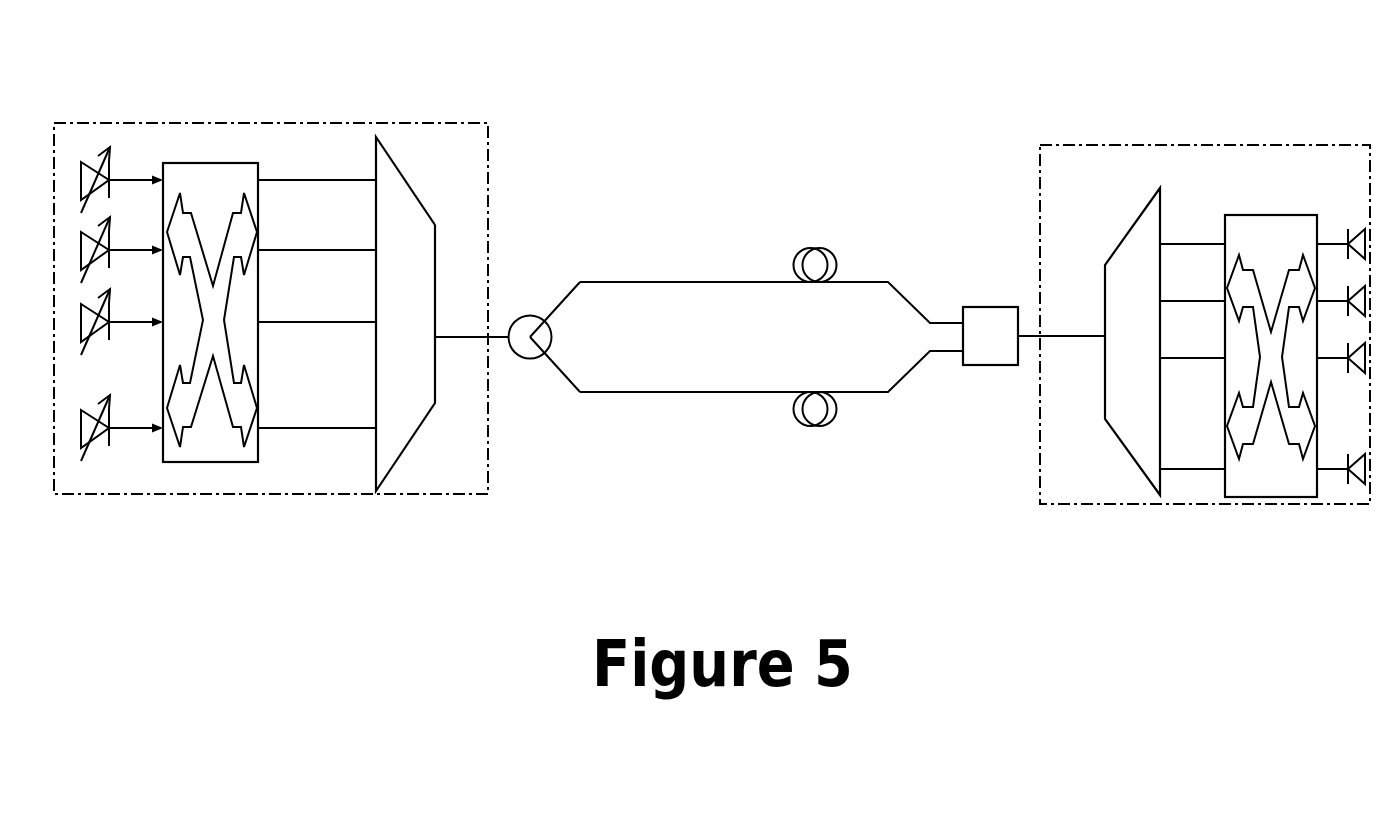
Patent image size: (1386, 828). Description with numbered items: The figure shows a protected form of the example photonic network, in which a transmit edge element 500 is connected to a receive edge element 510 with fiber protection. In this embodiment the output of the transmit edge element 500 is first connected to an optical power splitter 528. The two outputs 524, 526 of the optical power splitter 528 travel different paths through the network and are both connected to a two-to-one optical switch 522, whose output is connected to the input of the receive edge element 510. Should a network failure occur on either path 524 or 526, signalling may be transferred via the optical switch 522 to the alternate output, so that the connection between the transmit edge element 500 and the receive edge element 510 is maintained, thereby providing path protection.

The transmit edge element 500 is at (211, 120).
The receive edge element 510 is at (1099, 141).
The 2:1 optical switch 522 is at (1002, 307).
The output of optical power splitter 524 is at (732, 278).
The output of optical power splitter 526 is at (723, 393).
The optical power splitter 528 is at (521, 313).